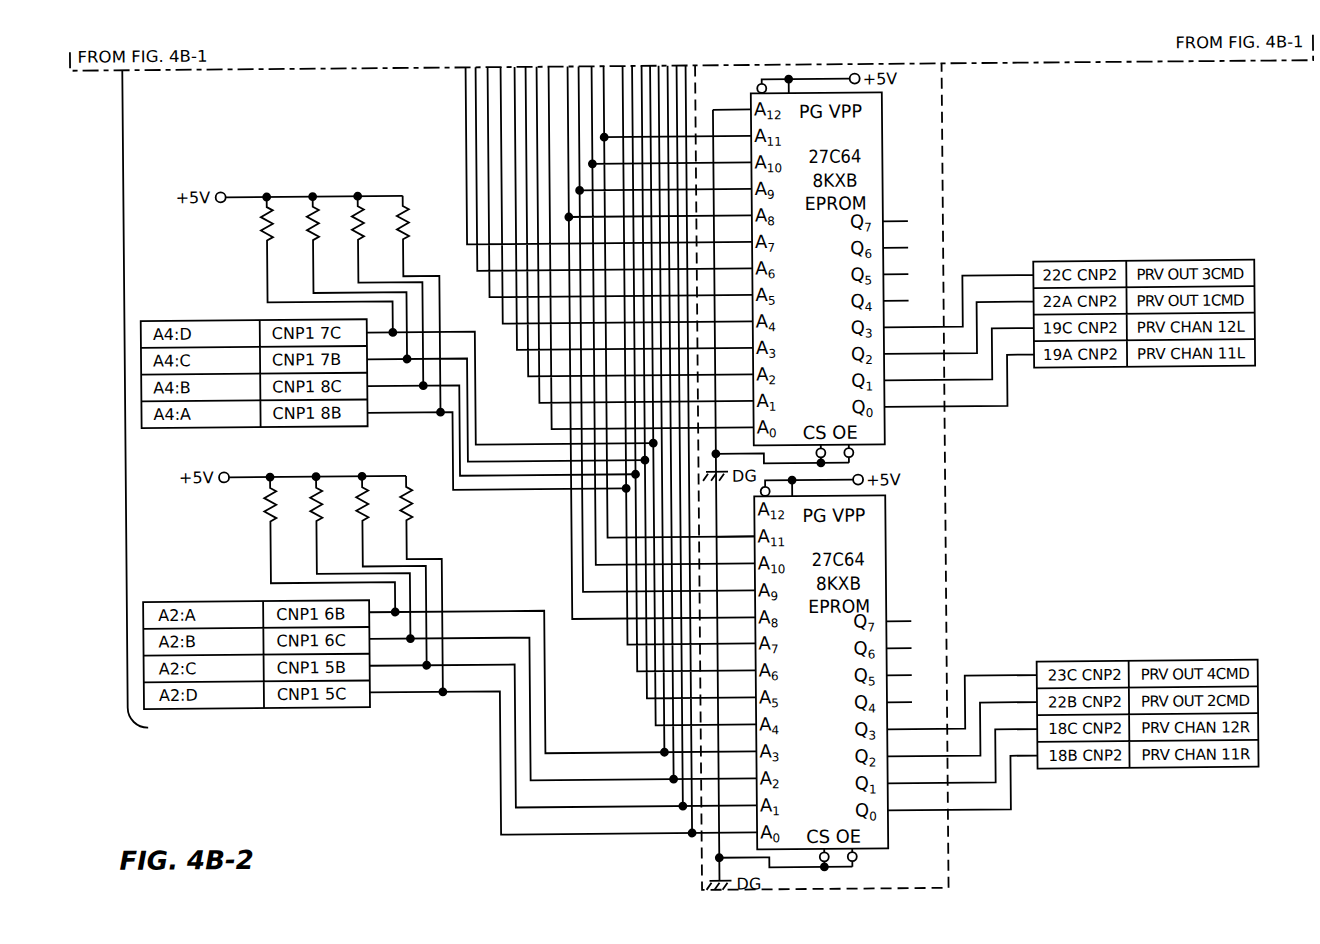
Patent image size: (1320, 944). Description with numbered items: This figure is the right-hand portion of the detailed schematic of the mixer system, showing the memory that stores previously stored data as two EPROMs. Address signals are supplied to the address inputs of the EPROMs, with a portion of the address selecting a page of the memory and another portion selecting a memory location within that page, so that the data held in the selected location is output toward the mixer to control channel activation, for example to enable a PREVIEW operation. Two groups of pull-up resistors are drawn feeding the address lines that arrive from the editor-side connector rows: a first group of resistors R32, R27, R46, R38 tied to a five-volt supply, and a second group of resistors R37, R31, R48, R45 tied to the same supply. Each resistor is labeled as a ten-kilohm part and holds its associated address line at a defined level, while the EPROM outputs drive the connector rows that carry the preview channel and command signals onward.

The 10K pull-up resistor R32 is at (320, 251).
The 10K pull-up resistor R27 is at (350, 264).
The 10K pull-up resistor R46 is at (382, 278).
The 10K pull-up resistor R38 is at (413, 291).
The 10K pull-up resistor R37 is at (324, 532).
The 10K pull-up resistor R31 is at (355, 545).
The 10K pull-up resistor R48 is at (387, 558).
The 10K pull-up resistor R45 is at (419, 572).